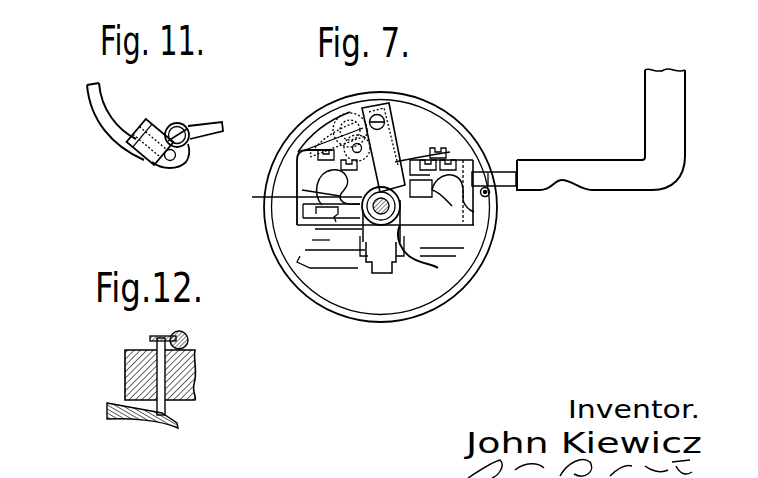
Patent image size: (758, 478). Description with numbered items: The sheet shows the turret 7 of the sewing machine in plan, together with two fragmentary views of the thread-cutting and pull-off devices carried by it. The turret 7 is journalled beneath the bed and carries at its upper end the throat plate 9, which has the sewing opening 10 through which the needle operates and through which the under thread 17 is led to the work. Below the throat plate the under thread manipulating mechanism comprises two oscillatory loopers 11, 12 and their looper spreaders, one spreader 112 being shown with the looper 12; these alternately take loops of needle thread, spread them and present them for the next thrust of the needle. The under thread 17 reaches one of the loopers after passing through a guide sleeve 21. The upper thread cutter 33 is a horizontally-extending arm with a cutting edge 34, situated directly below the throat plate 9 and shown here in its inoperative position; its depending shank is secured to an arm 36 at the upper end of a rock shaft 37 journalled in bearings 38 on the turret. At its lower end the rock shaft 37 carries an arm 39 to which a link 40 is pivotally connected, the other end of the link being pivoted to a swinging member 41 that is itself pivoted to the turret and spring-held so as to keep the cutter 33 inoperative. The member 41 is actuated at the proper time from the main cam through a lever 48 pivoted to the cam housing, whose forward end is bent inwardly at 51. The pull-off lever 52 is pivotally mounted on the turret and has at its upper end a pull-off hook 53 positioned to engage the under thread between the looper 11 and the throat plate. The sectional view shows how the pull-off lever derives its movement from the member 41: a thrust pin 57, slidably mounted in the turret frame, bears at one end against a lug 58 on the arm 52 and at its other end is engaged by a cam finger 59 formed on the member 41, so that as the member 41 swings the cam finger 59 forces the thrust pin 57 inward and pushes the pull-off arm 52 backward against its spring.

In FIG. 12, the turret 7 is at (124, 370).
In FIG. 7, the turret 7 is at (488, 262).
In FIG. 7, the throat plate 9 is at (383, 216).
In FIG. 7, the sewing opening 10 is at (354, 227).
In FIG. 7, the looper 11 is at (398, 203).
In FIG. 7, the looper 12 is at (395, 150).
In FIG. 7, the under thread 17 is at (390, 200).
In FIG. 7, the guide sleeve 21 is at (489, 197).
In FIG. 7, the thread cutter 33 is at (395, 162).
In FIG. 7, the cutting edge 34 is at (438, 148).
In FIG. 7, the arm 36 is at (389, 103).
In FIG. 11, the rock shaft 37 is at (160, 165).
In FIG. 7, the rock shaft 37 is at (346, 113).
In FIG. 11, the bearings 38 is at (91, 109).
In FIG. 7, the bearings 38 is at (318, 146).
In FIG. 11, the arm 39 is at (190, 165).
In FIG. 7, the arm 39 is at (363, 114).
In FIG. 11, the link 40 is at (210, 122).
In FIG. 7, the link 40 is at (492, 172).
In FIG. 7, the swinging member 41 is at (504, 172).
In FIG. 7, the lever 48 is at (668, 82).
In FIG. 7, the inwardly bent forward end 51 is at (600, 159).
In FIG. 12, the pull-off lever 52 is at (188, 336).
In FIG. 7, the pull-off lever 52 is at (428, 268).
In FIG. 7, the pull-off hook 53 is at (386, 254).
In FIG. 12, the thrust pin 57 is at (168, 411).
In FIG. 12, the lug 58 is at (150, 338).
In FIG. 12, the cam finger 59 is at (150, 427).
In FIG. 7, the spreader 112 is at (294, 204).